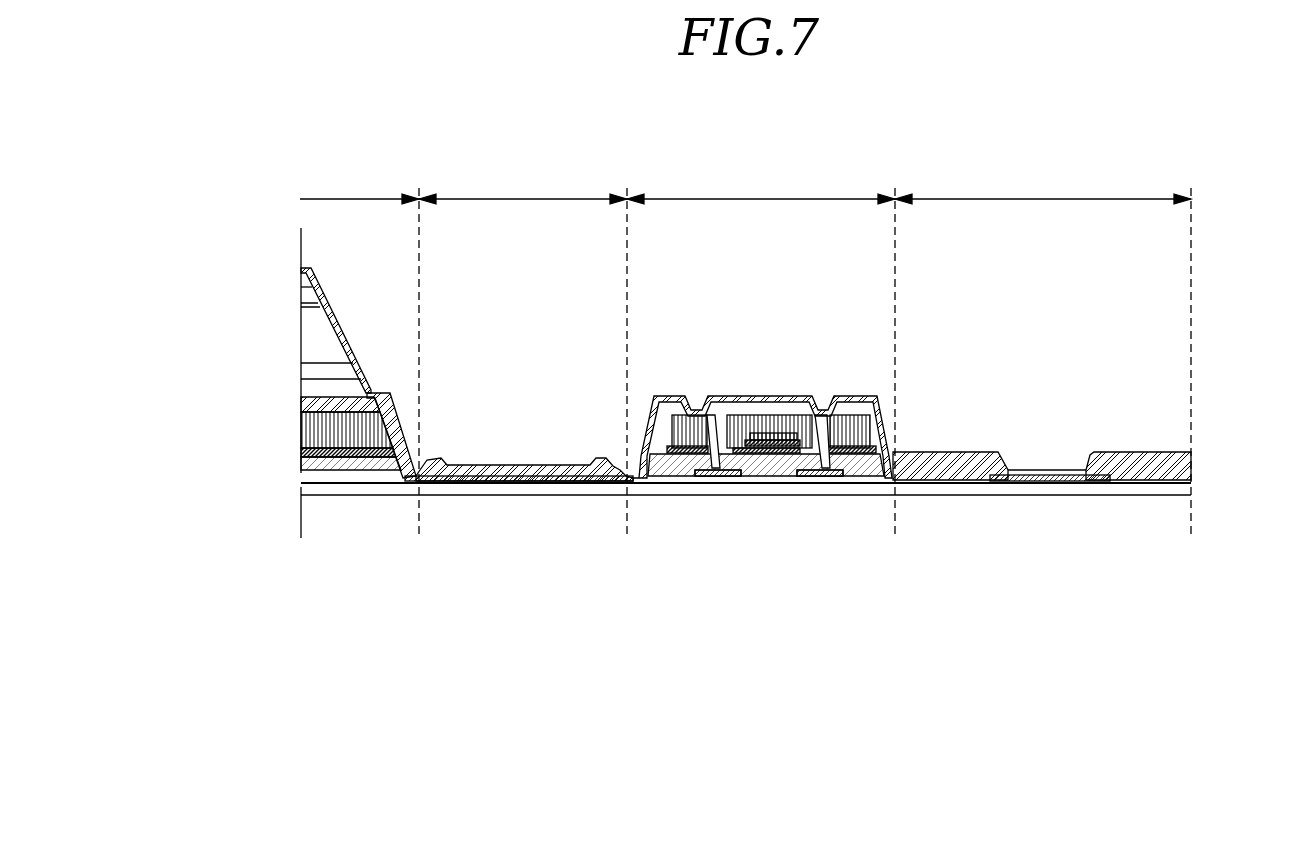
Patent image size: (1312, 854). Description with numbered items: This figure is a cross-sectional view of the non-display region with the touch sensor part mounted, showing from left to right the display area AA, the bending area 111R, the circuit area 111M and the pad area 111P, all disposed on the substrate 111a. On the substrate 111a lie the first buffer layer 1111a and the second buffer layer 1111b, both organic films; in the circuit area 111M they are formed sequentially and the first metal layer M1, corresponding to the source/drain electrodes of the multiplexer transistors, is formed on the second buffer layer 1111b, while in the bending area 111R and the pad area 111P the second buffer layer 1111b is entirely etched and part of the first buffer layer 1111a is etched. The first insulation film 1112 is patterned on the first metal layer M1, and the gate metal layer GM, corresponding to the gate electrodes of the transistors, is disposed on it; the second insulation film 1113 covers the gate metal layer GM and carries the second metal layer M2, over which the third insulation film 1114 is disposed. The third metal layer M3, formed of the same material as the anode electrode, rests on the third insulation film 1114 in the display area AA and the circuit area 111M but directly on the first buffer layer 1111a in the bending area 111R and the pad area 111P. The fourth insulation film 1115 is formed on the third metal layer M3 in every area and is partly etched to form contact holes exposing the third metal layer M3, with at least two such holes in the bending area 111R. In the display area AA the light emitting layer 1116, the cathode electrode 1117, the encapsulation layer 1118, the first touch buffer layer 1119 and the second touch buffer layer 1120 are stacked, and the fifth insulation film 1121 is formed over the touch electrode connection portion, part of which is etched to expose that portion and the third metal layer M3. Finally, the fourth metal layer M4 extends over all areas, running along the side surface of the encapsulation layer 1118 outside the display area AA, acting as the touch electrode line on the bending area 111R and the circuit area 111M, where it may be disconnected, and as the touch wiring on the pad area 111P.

The fifth insulation film 1121 is at (300, 275).
The second touch buffer layer 1120 is at (300, 287).
The first touch buffer layer 1119 is at (300, 305).
The encapsulation layer 1118 is at (300, 343).
The cathode electrode 1117 is at (300, 363).
The light emitting layer 1116 is at (300, 379).
The fourth insulation film 1115 is at (300, 404).
The third insulation film 1114 is at (300, 430).
The second insulation film 1113 is at (300, 451).
The first insulation film 1112 is at (300, 463).
The first buffer layer 1111a is at (1191, 483).
The second buffer layer 1111b is at (860, 474).
The substrate 111a is at (1191, 495).
The first metal layer M1 is at (795, 527).
The second metal layer M2 is at (777, 412).
The third metal layer M3 is at (545, 481).
The fourth metal layer M4 is at (340, 328).
The gate metal layer GM is at (753, 474).
The display area AA is at (359, 188).
The bending area 111R is at (523, 188).
The circuit area 111M is at (761, 188).
The pad area 111P is at (1043, 188).